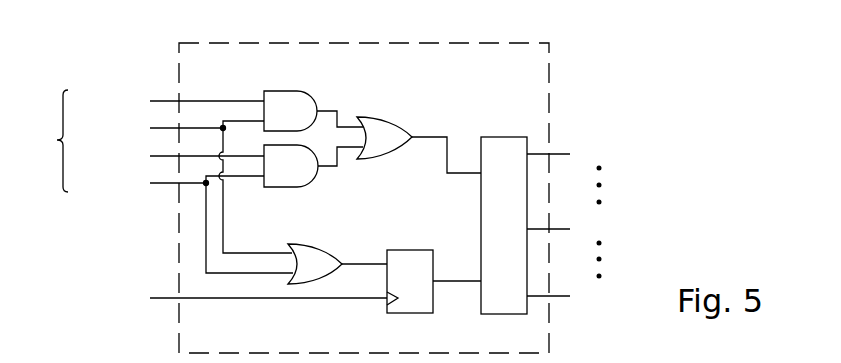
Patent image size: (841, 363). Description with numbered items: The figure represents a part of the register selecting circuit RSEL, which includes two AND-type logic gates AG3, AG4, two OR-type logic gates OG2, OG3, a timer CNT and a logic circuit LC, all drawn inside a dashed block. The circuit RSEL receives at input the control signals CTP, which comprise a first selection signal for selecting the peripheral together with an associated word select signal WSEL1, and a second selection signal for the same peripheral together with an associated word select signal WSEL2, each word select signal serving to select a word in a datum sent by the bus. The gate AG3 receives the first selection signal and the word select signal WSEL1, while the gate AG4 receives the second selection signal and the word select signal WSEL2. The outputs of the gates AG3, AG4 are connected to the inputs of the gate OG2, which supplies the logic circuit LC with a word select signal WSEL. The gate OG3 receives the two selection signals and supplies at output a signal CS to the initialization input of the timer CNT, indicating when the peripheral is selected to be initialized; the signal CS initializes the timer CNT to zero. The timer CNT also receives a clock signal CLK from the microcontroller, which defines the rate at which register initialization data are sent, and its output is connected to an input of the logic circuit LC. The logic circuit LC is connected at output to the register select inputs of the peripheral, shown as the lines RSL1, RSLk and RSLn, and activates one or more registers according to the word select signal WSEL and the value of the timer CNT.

The register selecting circuit RSEL is at (402, 75).
The control signals CTP is at (39, 141).
The word select signal WSEL1 is at (168, 101).
The word select signal WSEL2 is at (168, 156).
The clock signal CLK is at (246, 298).
The AND-type logic gate AG3 is at (268, 93).
The AND-type logic gate AG4 is at (272, 180).
The OR-type logic gate OG2 is at (368, 150).
The OR-type logic gate OG3 is at (302, 278).
The word select signal WSEL is at (446, 144).
The signal CS is at (364, 253).
The timer CNT is at (430, 288).
The logic circuit LC is at (515, 233).
The row select line 1 RSL1 is at (577, 154).
The row select line k RSLk is at (577, 228).
The row select line n RSLn is at (577, 295).